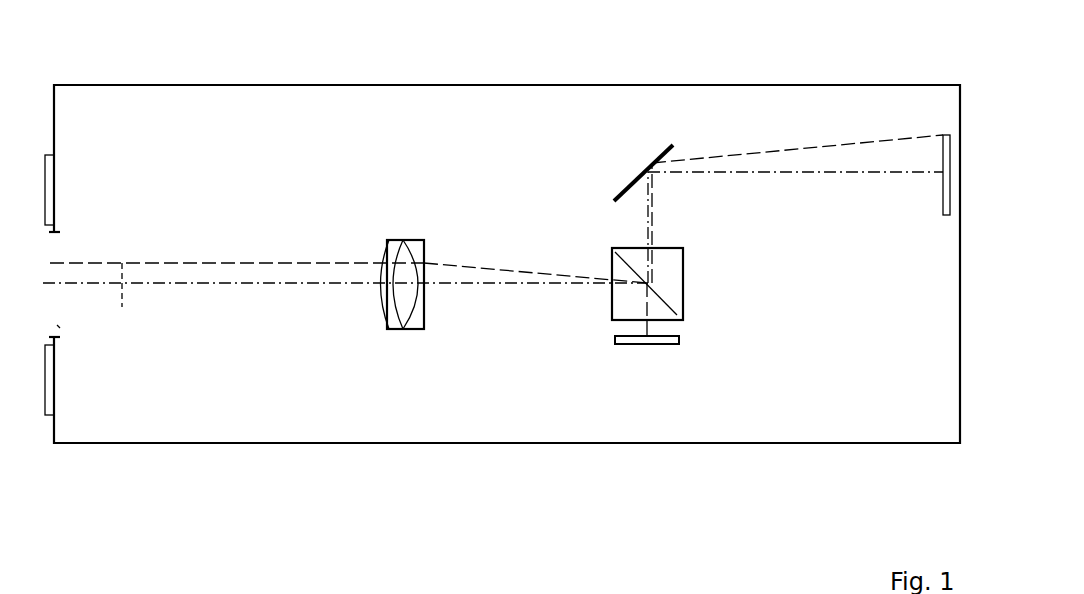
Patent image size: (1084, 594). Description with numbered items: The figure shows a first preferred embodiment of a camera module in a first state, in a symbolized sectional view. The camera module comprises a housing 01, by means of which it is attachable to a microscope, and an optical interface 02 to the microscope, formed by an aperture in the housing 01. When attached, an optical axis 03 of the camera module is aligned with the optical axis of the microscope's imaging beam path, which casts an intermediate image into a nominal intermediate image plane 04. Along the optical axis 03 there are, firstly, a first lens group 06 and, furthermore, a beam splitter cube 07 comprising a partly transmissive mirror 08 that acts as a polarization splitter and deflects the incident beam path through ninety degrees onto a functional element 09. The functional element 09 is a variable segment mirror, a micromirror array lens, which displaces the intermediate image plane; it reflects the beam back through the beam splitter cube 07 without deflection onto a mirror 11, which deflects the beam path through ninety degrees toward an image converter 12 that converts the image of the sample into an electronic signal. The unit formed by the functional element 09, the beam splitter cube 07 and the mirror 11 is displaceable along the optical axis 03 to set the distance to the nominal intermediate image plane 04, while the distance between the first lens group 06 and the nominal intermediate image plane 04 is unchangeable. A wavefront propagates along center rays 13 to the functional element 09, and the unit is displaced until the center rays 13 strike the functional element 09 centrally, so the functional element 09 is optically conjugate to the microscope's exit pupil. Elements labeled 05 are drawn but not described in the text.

The housing 01 is at (123, 443).
The optical interface 02 is at (58, 325).
The optical axis 03 is at (255, 285).
The nominal intermediate image plane 04 is at (122, 307).
The detector 05 is at (48, 153).
The first lens group 06 is at (415, 329).
The beam splitter cube 07 is at (612, 320).
The partly transmissive mirror 08 is at (675, 313).
The functional element 09 is at (633, 344).
The mirror 11 is at (614, 201).
The image converter 12 is at (946, 215).
The center rays 13 is at (305, 263).